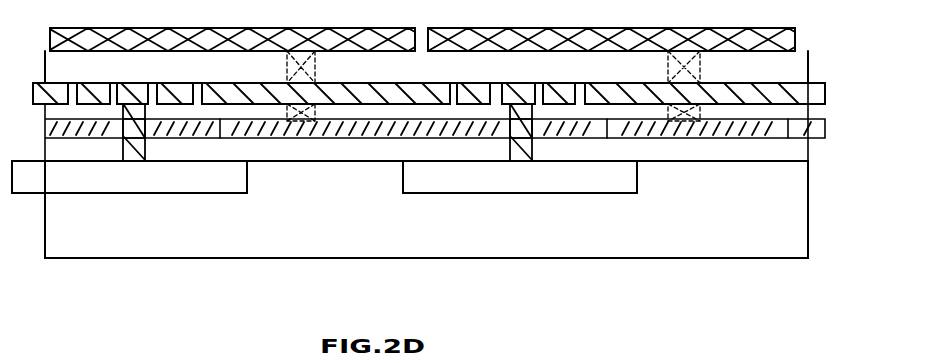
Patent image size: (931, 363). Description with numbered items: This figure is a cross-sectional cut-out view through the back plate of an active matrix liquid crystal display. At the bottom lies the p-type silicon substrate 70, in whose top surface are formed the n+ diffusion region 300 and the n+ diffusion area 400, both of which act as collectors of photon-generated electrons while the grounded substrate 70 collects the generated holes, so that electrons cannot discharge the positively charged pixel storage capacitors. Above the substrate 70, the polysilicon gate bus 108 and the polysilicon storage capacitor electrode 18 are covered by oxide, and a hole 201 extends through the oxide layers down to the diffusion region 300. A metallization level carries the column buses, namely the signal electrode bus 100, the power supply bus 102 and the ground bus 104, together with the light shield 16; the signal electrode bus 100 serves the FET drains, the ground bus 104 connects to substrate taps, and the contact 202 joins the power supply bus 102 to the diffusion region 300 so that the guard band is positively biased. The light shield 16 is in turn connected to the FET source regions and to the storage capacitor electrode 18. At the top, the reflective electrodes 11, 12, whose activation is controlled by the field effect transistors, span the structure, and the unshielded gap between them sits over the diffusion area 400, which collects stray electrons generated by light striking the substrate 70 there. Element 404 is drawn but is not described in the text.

The reflective electrode 11 is at (110, 28).
The reflective electrode 12 is at (502, 40).
The light shield 16 is at (387, 82).
The storage capacitor electrode 18 is at (238, 134).
The silicon substrate 70 is at (162, 242).
The signal electrode bus 100 is at (93, 83).
The power supply bus 102 is at (140, 90).
The ground bus 104 is at (172, 67).
The polysilicon gate bus 108 is at (122, 135).
The fifth plurality of holes 201 is at (146, 138).
The contact 202 is at (124, 138).
The diffusion region 300 is at (218, 178).
The diffusion area 400 is at (571, 177).
The right via plug 404 is at (511, 142).